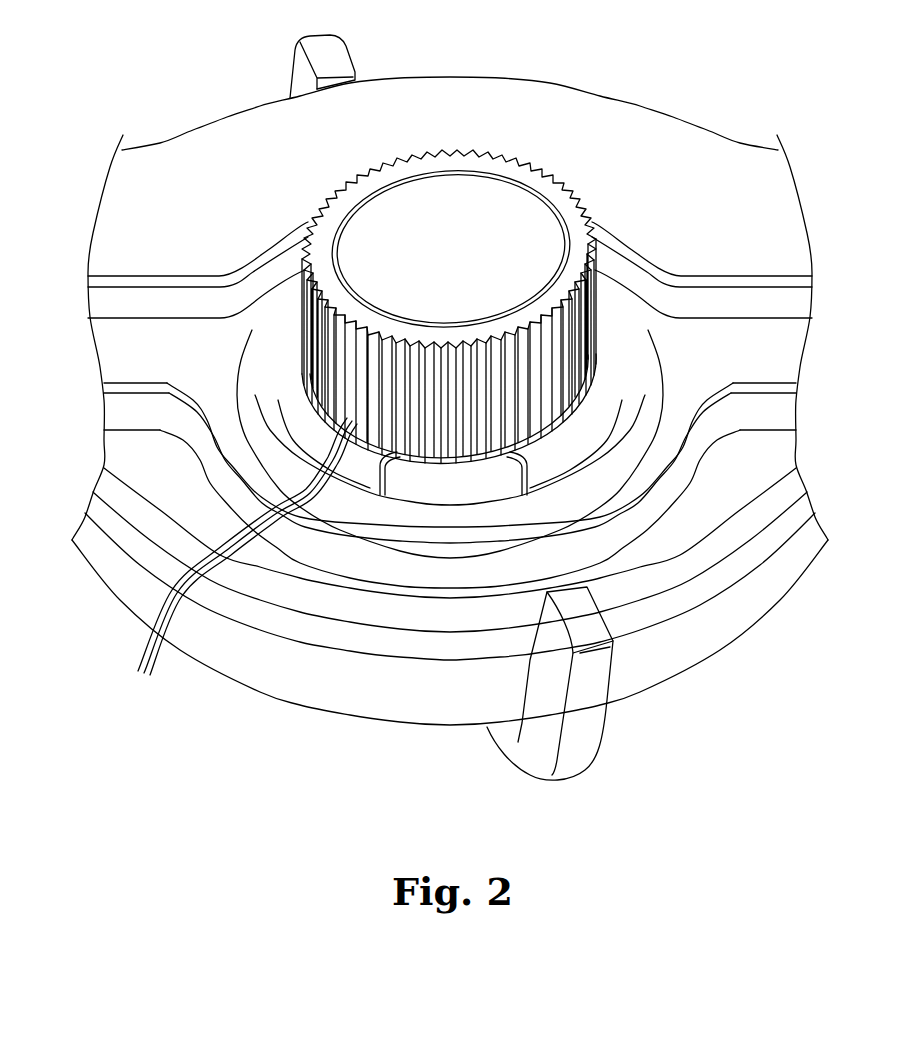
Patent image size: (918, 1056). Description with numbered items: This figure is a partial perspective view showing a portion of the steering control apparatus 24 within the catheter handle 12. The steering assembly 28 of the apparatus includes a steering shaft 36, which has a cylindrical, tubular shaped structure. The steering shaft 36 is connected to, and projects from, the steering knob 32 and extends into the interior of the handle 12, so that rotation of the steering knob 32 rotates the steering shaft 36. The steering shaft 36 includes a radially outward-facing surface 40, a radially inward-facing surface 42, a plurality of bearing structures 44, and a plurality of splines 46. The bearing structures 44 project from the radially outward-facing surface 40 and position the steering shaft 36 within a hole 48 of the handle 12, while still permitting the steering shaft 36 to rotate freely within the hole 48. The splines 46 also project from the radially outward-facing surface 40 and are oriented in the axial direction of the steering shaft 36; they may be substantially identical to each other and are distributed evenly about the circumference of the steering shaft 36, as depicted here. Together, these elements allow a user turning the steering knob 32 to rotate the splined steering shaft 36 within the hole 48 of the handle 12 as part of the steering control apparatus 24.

The catheter handle 12 is at (273, 697).
The steering control apparatus 24 is at (600, 53).
The steering assembly 28 is at (440, 150).
The steering knob 32 is at (540, 782).
The steering shaft 36 is at (298, 330).
The radially outward-facing surface 40 is at (433, 353).
The radially inward-facing surface 42 is at (557, 223).
The bearing structures 44 is at (600, 343).
The splines 46 is at (245, 560).
The hole 48 is at (585, 463).